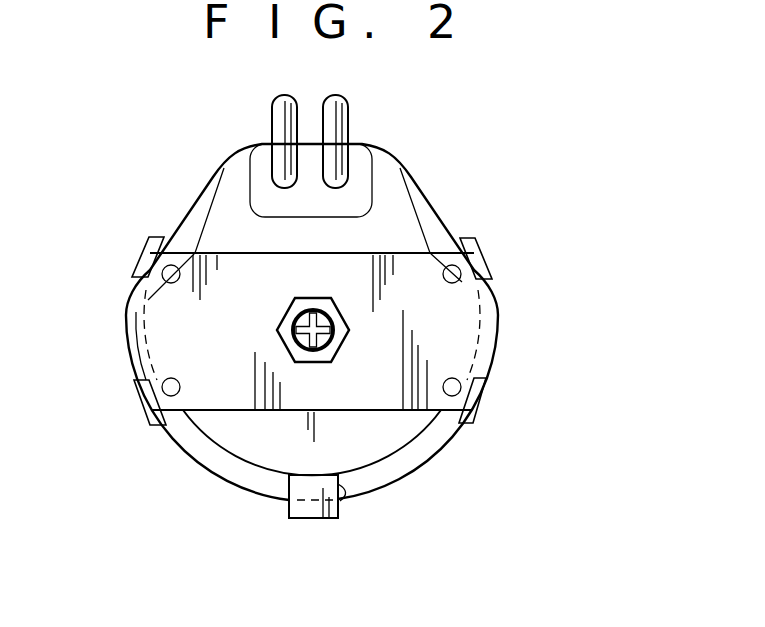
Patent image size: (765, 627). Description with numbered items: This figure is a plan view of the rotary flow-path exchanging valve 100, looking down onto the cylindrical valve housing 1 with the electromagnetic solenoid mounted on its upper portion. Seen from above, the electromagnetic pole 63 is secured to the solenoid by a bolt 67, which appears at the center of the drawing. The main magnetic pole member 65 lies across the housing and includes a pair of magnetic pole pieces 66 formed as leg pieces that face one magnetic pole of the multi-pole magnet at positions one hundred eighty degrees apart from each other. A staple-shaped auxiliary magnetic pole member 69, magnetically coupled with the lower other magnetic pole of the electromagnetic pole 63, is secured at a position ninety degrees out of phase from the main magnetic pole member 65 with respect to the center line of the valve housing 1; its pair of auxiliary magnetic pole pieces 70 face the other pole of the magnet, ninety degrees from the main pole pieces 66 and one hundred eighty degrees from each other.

The valve housing 1 is at (441, 185).
The actuator unit 100 is at (351, 359).
The electromagnetic pole 63 is at (250, 433).
The main magnetic pole member 65 is at (400, 410).
The magnetic pole pieces 66 is at (150, 423).
The bolt 67 is at (283, 317).
The auxiliary magnetic pole member 69 is at (343, 490).
The auxiliary magnetic pole pieces 70 is at (313, 520).